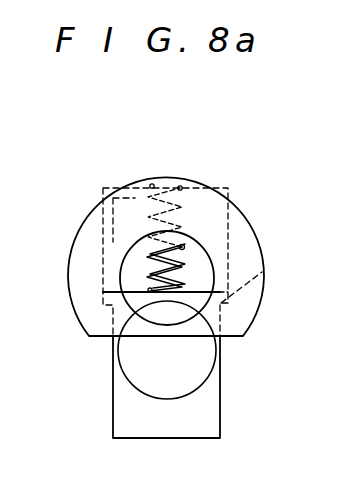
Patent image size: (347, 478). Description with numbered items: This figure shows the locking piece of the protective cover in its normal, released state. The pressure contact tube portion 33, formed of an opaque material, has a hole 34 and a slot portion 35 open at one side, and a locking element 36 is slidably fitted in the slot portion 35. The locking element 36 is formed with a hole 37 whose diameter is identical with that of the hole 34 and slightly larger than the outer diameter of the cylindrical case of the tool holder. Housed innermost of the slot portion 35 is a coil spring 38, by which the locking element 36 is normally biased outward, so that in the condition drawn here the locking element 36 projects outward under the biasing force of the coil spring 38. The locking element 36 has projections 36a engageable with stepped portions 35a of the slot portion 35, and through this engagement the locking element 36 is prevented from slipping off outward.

The pressure contact tube portion 33 is at (262, 302).
The hole 34 is at (196, 266).
The slot portion 35 is at (118, 195).
The stepped portions 35a is at (231, 320).
The locking element 36 is at (220, 427).
The projections 36a is at (262, 269).
The hole 37 is at (190, 372).
The coil spring 38 is at (184, 245).